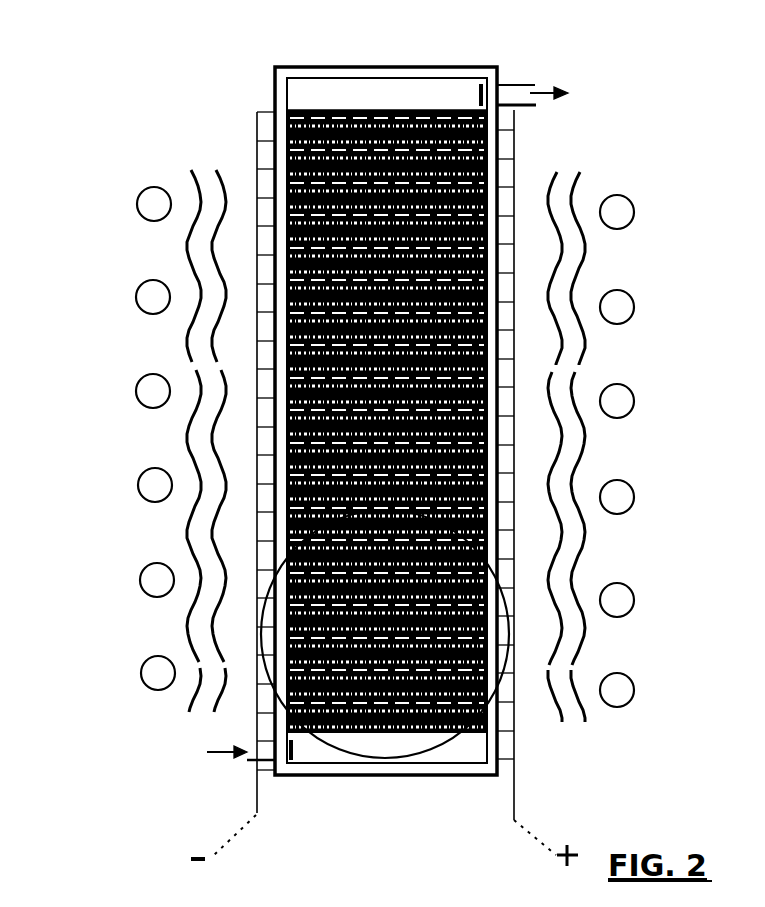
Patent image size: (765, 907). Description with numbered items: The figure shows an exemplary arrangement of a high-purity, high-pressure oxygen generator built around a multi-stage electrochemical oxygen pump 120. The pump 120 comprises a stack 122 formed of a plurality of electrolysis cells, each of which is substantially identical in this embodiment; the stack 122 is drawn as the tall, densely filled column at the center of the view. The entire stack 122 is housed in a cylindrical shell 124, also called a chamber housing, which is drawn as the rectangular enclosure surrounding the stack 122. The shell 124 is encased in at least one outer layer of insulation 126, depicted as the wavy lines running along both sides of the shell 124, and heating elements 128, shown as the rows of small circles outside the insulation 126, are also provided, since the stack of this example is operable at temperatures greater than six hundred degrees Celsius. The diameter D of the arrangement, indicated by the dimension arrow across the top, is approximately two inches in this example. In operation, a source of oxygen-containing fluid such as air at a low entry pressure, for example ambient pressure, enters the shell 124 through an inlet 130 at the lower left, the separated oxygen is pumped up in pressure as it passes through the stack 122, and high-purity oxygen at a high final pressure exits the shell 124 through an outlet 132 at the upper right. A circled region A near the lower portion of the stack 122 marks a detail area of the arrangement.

The pump 120 is at (208, 140).
The stack 122 is at (481, 318).
The cylindrical shell 124 is at (286, 106).
The outer layer of insulation 126 is at (189, 552).
The heating elements 128 is at (147, 690).
The inlet 130 is at (253, 742).
The outlet 132 is at (522, 108).
The detail region A is at (513, 740).
The diameter D is at (270, 37).